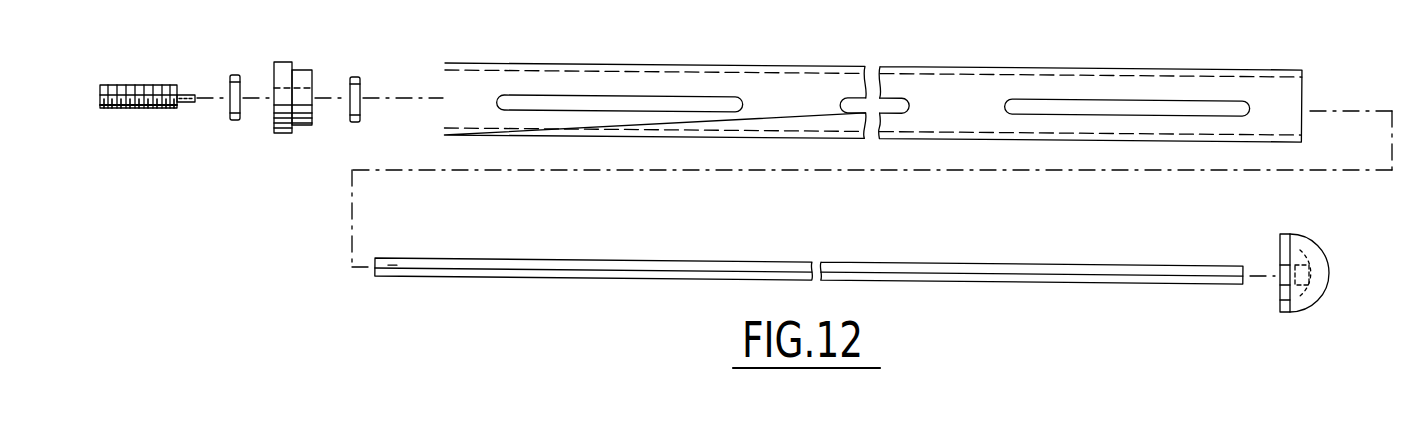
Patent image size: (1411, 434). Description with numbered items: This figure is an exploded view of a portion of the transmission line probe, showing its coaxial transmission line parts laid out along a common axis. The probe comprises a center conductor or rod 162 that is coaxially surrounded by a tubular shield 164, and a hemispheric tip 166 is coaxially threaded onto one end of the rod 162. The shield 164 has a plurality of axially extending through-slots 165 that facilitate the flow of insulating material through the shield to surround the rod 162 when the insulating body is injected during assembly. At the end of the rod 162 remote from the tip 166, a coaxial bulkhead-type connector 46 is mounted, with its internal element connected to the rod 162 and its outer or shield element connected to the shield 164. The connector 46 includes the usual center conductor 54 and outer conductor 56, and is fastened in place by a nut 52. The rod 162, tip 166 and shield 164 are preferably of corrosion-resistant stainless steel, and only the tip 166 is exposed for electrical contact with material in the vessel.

The coaxial bulkhead-type connector 46 is at (341, 56).
The nut 52 is at (233, 120).
The center conductor 54 is at (183, 95).
The outer conductor 56 is at (147, 90).
The center conductor rod 162 is at (873, 265).
The tubular shield 164 is at (953, 72).
The through-slots 165 is at (845, 99).
The hemispheric tip 166 is at (1307, 243).